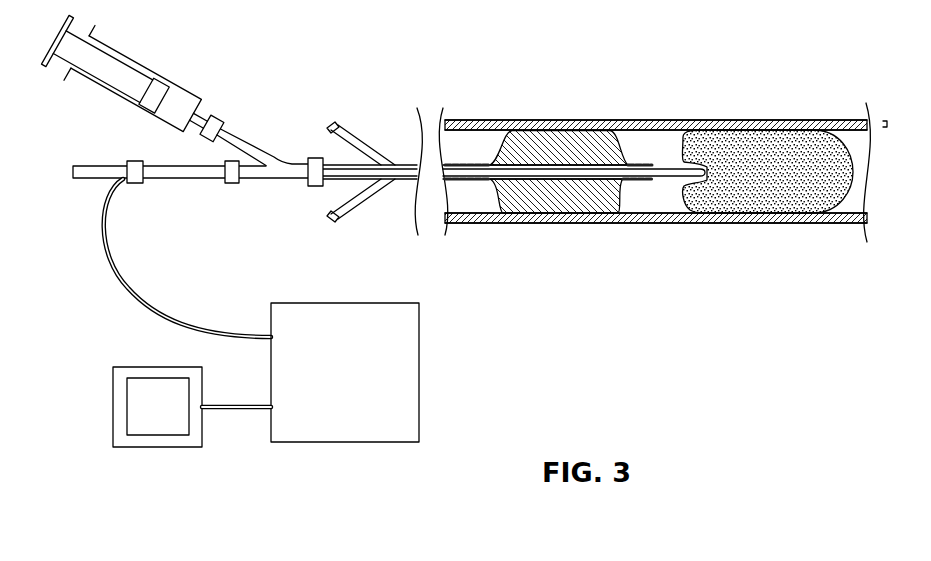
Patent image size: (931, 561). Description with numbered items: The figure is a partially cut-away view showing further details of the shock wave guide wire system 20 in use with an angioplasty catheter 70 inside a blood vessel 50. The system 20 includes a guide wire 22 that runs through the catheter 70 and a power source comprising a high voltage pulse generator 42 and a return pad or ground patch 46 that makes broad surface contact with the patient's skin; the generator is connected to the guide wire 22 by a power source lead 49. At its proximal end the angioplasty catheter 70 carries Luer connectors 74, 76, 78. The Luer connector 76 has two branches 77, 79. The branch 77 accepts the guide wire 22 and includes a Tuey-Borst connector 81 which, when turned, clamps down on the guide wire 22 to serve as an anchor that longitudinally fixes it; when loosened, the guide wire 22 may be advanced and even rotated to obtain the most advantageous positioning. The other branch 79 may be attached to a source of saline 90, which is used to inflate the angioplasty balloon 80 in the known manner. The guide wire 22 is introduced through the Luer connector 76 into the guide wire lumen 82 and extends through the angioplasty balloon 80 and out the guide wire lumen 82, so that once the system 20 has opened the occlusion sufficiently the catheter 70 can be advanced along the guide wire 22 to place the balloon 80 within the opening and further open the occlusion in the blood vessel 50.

The shock wave guide wire system 20 is at (192, 196).
The guide wire 22 is at (166, 181).
The high voltage pulse generator 42 is at (373, 302).
The return pad or ground patch 46 is at (162, 366).
The power source lead 49 is at (130, 287).
The blood vessel 50 is at (647, 202).
The angioplasty catheter 70 is at (481, 137).
The Luer connector 74 is at (338, 122).
The Luer connector 76 is at (291, 196).
The branch 77 is at (260, 181).
The Luer connector 78 is at (335, 220).
The branch 79 is at (243, 138).
The angioplasty balloon 80 is at (557, 128).
The Tuey-Borst connector 81 is at (225, 163).
The guide wire lumen 82 is at (660, 168).
The source of saline 90 is at (184, 99).